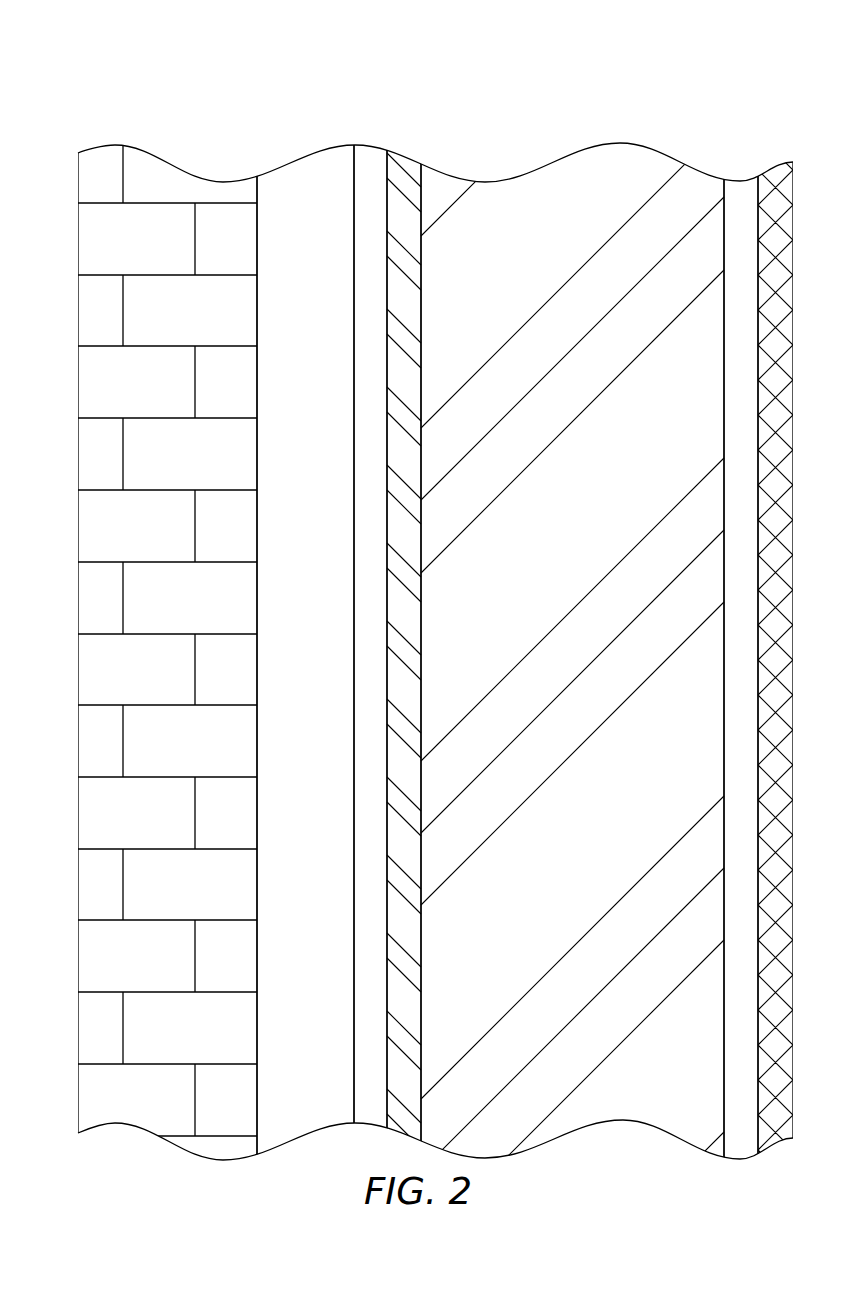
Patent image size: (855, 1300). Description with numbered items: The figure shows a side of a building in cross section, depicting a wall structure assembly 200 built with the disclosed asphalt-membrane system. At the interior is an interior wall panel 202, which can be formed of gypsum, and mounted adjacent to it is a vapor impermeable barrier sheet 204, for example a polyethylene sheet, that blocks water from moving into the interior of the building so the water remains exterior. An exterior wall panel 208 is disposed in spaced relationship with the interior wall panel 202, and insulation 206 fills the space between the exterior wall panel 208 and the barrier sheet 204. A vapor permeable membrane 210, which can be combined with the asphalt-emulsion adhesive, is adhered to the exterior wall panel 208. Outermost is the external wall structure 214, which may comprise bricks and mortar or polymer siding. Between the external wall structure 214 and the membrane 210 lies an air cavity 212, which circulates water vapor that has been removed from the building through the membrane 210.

The wall structure assembly 200 is at (77, 103).
The interior wall panel 202 is at (783, 180).
The vapor impermeable barrier sheet 204 is at (739, 198).
The insulation 206 is at (572, 176).
The exterior wall panel 208 is at (405, 178).
The vapor permeable membrane 210 is at (372, 165).
The air cavity 212 is at (305, 185).
The external wall structure 214 is at (163, 156).